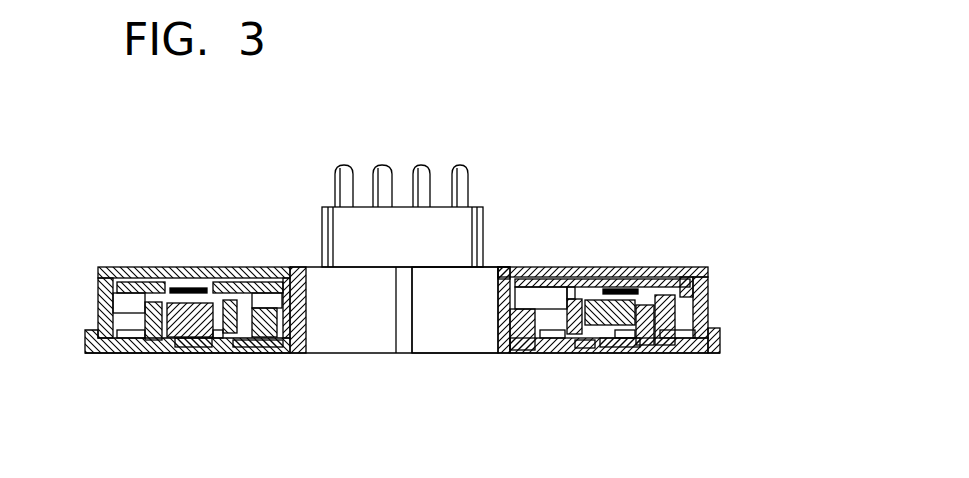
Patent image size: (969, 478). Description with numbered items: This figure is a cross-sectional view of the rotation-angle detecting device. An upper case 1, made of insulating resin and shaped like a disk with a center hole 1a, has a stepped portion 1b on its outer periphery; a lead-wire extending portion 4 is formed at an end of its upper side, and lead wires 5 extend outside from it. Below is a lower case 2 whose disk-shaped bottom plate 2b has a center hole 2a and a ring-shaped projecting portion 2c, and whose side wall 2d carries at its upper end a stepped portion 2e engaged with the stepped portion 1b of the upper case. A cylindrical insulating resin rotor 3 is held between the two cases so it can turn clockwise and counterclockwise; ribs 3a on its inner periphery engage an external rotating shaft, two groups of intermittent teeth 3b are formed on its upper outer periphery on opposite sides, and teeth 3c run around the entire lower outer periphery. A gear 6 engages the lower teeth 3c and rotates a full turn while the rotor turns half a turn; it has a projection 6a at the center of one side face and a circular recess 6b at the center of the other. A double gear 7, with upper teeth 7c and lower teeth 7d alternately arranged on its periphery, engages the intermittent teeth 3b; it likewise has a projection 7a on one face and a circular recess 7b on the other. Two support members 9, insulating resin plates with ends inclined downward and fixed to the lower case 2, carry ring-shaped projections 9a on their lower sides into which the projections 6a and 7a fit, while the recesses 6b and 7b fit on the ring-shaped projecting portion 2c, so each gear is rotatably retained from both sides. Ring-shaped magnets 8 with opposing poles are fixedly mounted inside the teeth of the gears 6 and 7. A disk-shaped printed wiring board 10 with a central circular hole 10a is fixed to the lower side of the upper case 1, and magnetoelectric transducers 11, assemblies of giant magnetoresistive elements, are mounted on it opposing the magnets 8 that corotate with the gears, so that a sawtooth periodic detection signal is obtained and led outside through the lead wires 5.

The upper case 1 is at (98, 268).
The center hole 1a is at (502, 270).
The stepped portion 1b is at (692, 270).
The lower case 2 is at (86, 345).
The center hole 2a is at (513, 337).
The bottom plate 2b is at (560, 355).
The ring-shaped projecting portion 2c is at (176, 355).
The side wall 2d is at (705, 310).
The stepped portion 2e is at (703, 284).
The rotor 3 is at (316, 305).
The ribs 3a is at (410, 320).
The intermittent teeth 3b is at (268, 268).
The teeth 3c is at (262, 355).
The lead-wire extending portion 4 is at (484, 210).
The lead wires 5 is at (468, 168).
The gear 6 is at (148, 347).
The projection 6a is at (240, 355).
The circular recess 6b is at (197, 355).
The gear 7 is at (660, 351).
The projection 7a is at (582, 355).
The circular recess 7b is at (610, 345).
The upper teeth 7c is at (707, 320).
The lower teeth 7d is at (680, 328).
The ring-shaped magnets 8 is at (137, 270).
The support members 9 is at (186, 272).
The ring-shaped projections 9a is at (167, 272).
The printed wiring board 10 is at (285, 268).
The circular hole 10a is at (499, 307).
The magnetoelectric transducers 11 is at (185, 290).